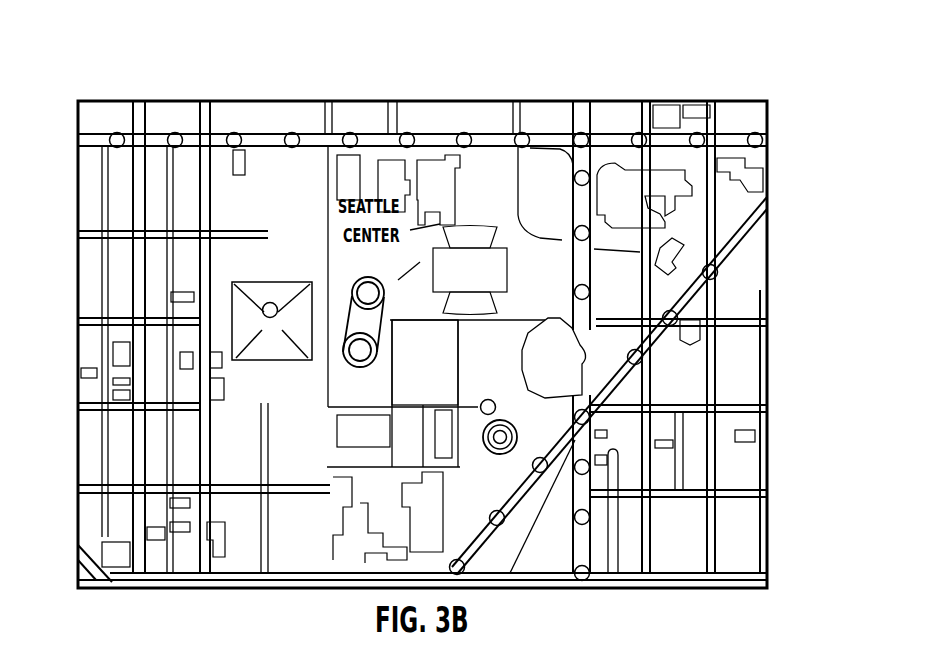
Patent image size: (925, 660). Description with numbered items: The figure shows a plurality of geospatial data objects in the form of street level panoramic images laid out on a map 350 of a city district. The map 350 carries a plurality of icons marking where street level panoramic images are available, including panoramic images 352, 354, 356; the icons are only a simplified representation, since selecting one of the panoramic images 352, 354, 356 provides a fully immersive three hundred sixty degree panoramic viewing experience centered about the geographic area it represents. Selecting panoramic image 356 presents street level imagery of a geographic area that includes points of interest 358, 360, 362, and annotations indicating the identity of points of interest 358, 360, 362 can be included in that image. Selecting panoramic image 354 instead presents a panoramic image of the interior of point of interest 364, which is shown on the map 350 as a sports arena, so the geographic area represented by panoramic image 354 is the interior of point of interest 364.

The map 350 is at (724, 86).
The panoramic image 352 is at (718, 272).
The panoramic image 354 is at (269, 302).
The panoramic image 356 is at (496, 407).
The point of interest 358 is at (500, 454).
The point of interest 360 is at (430, 405).
The point of interest 362 is at (548, 342).
The point of interest 364 is at (236, 327).